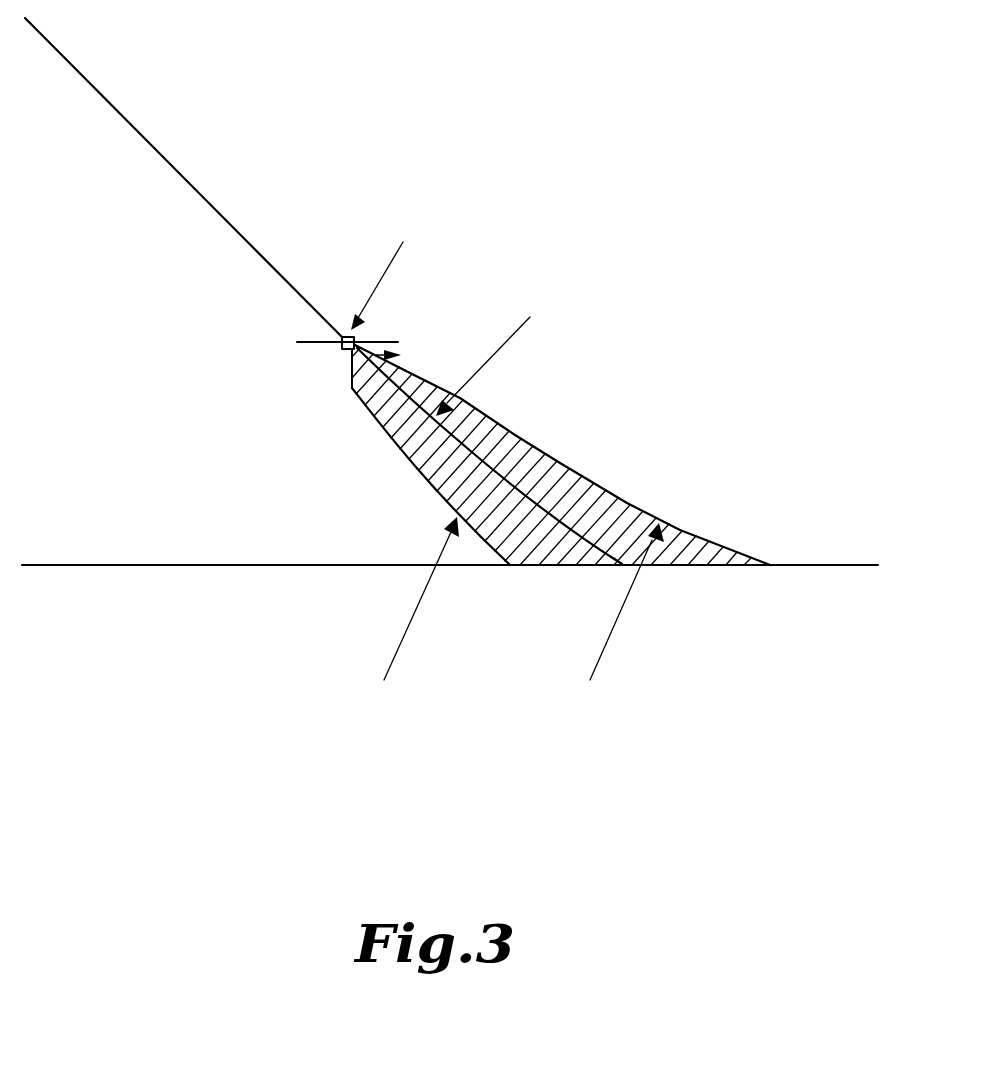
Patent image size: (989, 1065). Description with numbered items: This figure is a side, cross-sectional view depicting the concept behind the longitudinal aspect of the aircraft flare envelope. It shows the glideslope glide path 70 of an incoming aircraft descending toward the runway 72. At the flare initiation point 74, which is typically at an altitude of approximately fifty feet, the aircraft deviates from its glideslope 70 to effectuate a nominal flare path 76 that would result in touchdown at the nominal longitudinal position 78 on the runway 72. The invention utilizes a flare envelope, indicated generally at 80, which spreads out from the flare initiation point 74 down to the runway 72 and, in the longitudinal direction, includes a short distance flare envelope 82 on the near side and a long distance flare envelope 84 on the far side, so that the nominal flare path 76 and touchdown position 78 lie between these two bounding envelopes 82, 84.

The glideslope glide path 70 is at (242, 231).
The runway 72 is at (848, 567).
The flare initiation point 74 is at (343, 350).
The nominal average flare path 76 is at (505, 481).
The nominal longitudinal position 78 is at (620, 567).
The flare envelope 80 is at (401, 355).
The short distance flare envelope 82 is at (407, 458).
The long distance flare envelope 84 is at (627, 503).